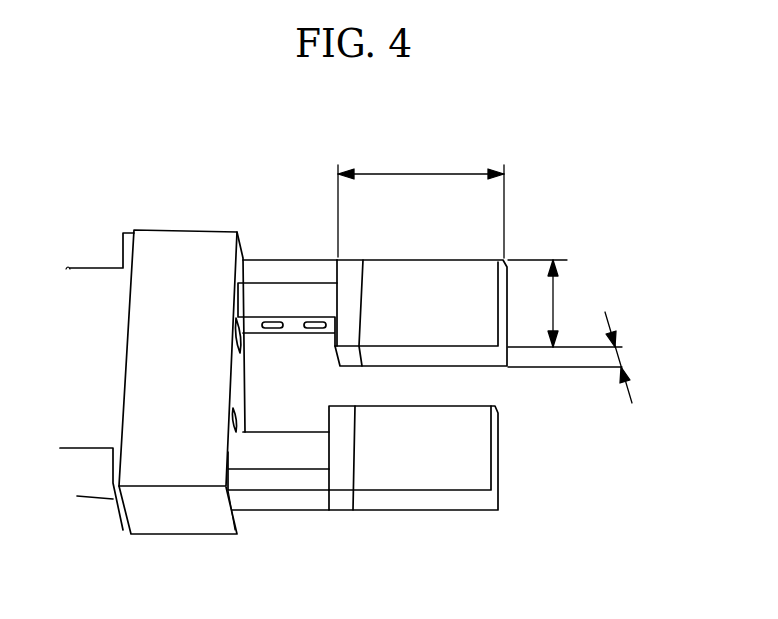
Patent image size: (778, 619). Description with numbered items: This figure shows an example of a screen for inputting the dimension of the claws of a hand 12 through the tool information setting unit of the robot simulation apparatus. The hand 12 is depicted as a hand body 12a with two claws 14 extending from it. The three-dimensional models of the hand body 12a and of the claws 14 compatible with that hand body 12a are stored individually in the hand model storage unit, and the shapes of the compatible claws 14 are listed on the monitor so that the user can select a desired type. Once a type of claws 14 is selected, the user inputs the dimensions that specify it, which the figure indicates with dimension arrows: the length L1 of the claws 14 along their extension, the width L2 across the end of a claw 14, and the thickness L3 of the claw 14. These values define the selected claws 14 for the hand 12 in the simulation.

The hand 12 is at (152, 334).
The hand body 12a is at (134, 230).
The claw 14 is at (422, 288).
The length L1 is at (421, 199).
The width L2 is at (565, 313).
The thickness L3 is at (633, 357).